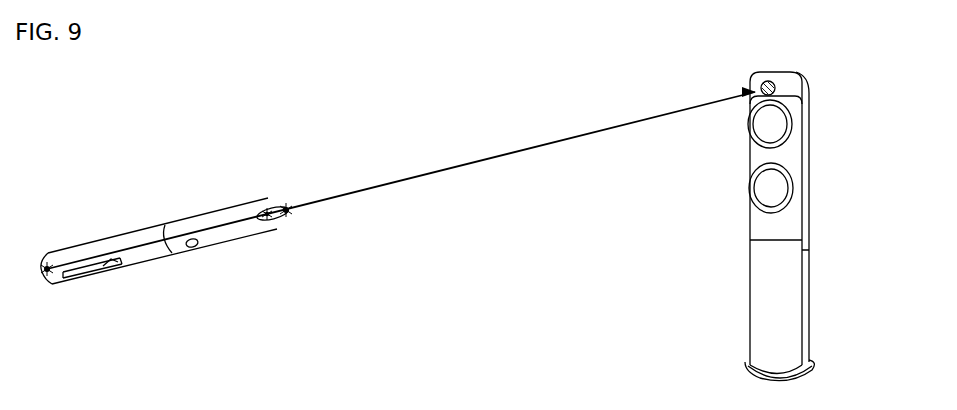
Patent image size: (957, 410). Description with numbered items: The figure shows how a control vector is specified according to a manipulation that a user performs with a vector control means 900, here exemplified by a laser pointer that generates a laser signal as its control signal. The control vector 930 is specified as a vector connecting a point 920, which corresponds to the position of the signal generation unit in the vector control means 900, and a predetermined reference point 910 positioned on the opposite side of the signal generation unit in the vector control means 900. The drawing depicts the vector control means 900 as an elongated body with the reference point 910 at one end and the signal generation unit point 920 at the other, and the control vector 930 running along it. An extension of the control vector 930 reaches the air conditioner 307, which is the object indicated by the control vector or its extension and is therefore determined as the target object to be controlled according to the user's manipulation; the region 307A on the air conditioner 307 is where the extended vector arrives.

The vector control means 900 is at (117, 242).
The predetermined reference point 910 is at (46, 274).
The point corresponding to a position of a signal generation unit 920 is at (285, 208).
The control vector 930 is at (222, 228).
The air conditioner 307 is at (760, 302).
The sensor of speaker device 307A is at (775, 89).